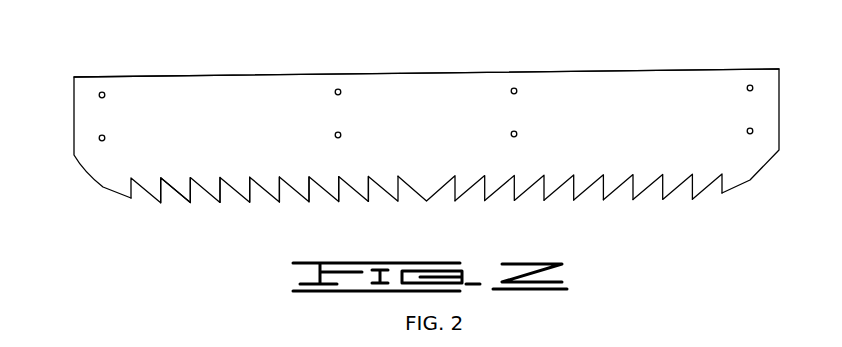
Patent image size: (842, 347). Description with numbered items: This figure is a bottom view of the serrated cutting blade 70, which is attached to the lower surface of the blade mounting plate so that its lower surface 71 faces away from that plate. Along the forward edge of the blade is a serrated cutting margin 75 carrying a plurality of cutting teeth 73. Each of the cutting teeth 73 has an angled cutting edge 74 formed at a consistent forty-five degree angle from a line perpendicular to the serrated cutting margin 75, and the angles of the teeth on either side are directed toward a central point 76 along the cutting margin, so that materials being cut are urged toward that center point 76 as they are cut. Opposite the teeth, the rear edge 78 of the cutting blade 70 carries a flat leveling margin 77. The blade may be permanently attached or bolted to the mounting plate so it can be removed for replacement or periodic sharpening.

The serrated cutting blade 70 is at (406, 131).
The lower surface 71 is at (638, 131).
The cutting teeth 73 is at (247, 198).
The angled cutting edge 74 is at (303, 195).
The serrated cutting margin 75 is at (190, 203).
The central point 76 is at (426, 201).
The flat leveling margin 77 is at (500, 73).
The rear edge 78 is at (273, 73).